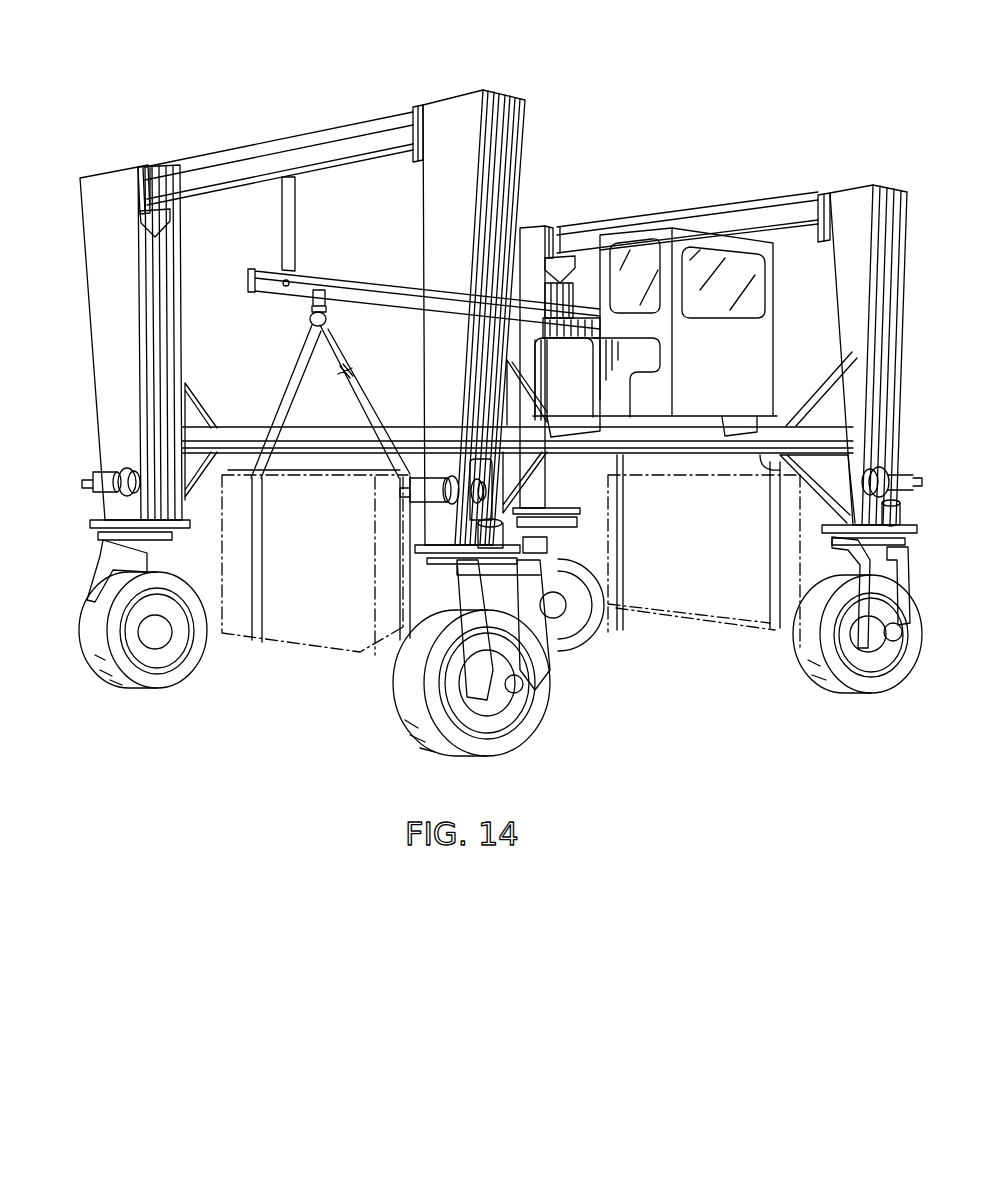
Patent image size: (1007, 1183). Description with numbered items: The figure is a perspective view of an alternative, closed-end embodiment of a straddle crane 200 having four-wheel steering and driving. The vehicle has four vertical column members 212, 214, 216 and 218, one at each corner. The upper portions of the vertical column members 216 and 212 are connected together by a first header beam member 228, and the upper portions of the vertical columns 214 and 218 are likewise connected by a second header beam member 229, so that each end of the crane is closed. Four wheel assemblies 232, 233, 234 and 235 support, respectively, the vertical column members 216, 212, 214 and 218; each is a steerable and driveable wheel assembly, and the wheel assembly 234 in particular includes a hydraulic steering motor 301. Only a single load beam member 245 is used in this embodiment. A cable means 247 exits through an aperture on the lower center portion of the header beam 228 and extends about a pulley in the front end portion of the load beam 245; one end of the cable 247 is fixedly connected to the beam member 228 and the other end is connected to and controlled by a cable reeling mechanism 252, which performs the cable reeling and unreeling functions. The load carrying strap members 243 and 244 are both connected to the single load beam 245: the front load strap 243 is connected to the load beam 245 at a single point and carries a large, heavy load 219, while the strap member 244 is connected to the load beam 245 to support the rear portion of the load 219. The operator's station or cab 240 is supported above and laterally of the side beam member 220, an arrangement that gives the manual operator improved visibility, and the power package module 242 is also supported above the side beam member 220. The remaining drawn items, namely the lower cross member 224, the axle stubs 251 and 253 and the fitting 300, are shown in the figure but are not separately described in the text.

The straddle crane 200 is at (657, 62).
The vertical column member 212 is at (455, 110).
The vertical column member 214 is at (853, 198).
The vertical column member 216 is at (112, 182).
The vertical column member 218 is at (527, 240).
The load 219 is at (300, 655).
The side beam member 220 is at (660, 438).
The lower cross beam 224 is at (320, 433).
The first header beam member 228 is at (310, 155).
The second header beam member 229 is at (778, 218).
The wheel assembly 232 is at (178, 698).
The wheel assembly 233 is at (546, 734).
The wheel assembly 234 is at (836, 705).
The wheel assembly 235 is at (580, 657).
The operator's cab 240 is at (757, 343).
The power package module 242 is at (647, 355).
The front load strap 243 is at (285, 386).
The strap member 244 is at (770, 553).
The load beam member 245 is at (370, 287).
The cable means 247 is at (282, 227).
The axle stub 251 is at (86, 474).
The cable reeling mechanism 252 is at (418, 470).
The axle stub 253 is at (906, 468).
The steering cylinder 300 is at (485, 545).
The hydraulic steering motor 301 is at (901, 510).